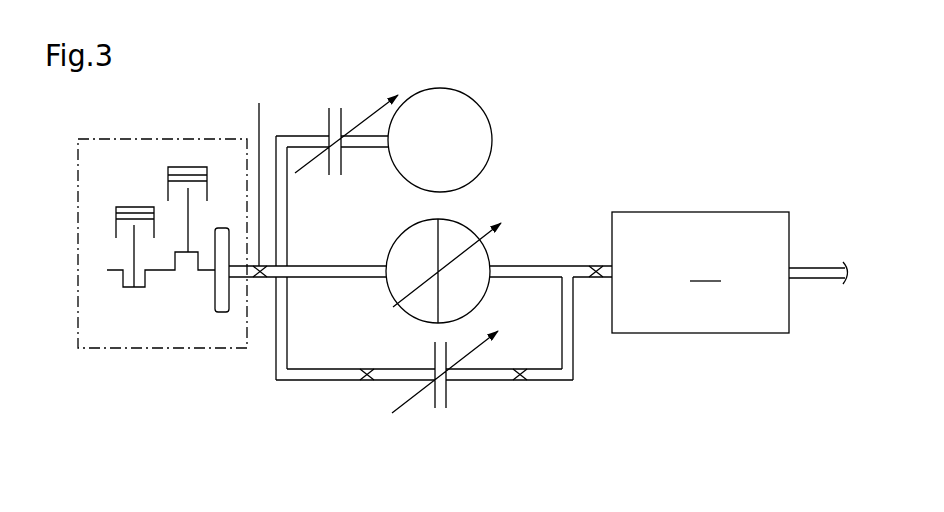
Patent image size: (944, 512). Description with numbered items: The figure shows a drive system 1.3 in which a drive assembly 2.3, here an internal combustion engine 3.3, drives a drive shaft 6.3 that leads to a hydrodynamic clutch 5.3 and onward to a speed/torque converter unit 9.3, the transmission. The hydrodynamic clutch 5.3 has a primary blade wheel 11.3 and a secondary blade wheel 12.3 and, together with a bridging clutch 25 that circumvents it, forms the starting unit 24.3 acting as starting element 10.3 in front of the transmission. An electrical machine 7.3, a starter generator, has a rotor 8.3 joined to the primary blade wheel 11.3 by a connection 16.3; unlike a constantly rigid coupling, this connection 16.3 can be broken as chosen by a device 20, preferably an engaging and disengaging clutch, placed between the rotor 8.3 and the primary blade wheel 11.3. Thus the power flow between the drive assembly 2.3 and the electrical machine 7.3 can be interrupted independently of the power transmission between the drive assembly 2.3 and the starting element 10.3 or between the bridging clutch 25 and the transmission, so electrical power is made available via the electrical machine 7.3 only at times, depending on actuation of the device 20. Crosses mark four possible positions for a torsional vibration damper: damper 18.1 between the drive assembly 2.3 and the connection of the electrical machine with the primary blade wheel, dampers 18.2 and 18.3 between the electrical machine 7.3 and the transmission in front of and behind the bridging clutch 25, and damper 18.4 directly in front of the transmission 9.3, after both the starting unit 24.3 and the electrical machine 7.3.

The drive system 1.3 is at (499, 97).
The drive assembly 2.3 is at (232, 208).
The internal combustion engine 3.3 is at (155, 148).
The hydrodynamic clutch 5.3 is at (522, 253).
The drive shaft 6.3 is at (259, 173).
The electrical machine 7.3 is at (440, 115).
The rotor of the electrical machine 8.3 is at (432, 105).
The speed/torque converter unit 9.3 is at (730, 272).
The starting element 10.3 is at (575, 212).
The primary blade wheel 11.3 is at (474, 215).
The secondary blade wheel 12.3 is at (408, 250).
The connection between the rotor and the primary blade wheel 16.3 is at (293, 262).
The torsional vibration damper 18.1 is at (262, 287).
The torsional vibration damper 18.2 is at (367, 383).
The torsional vibration damper 18.3 is at (522, 383).
The torsional vibration damper 18.4 is at (591, 264).
The device for the alternative coupling or decoupling of the rotor from the primary 20 is at (324, 120).
The starting unit 24.3 is at (474, 215).
The bridging clutch 25 is at (455, 400).